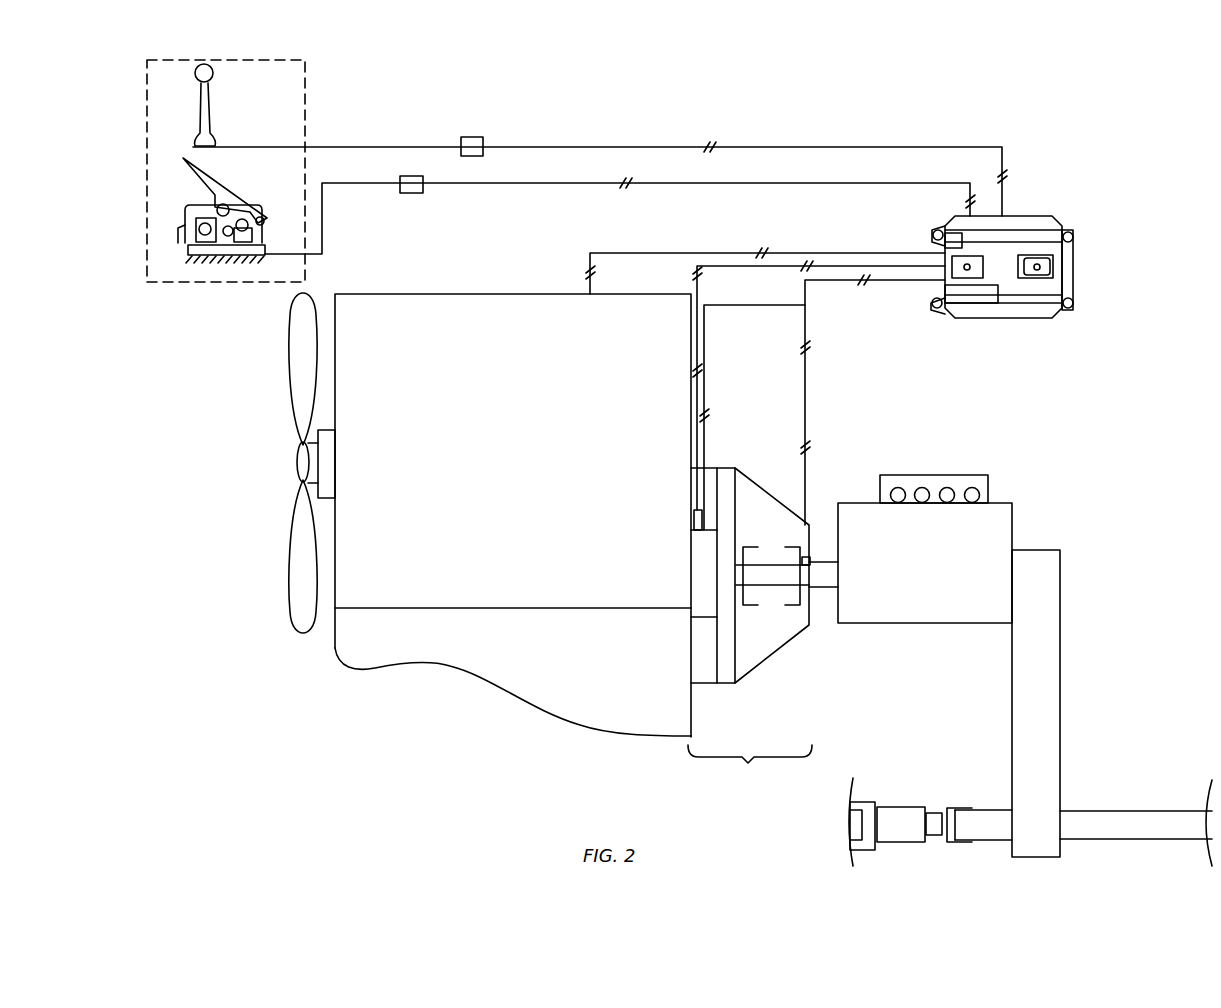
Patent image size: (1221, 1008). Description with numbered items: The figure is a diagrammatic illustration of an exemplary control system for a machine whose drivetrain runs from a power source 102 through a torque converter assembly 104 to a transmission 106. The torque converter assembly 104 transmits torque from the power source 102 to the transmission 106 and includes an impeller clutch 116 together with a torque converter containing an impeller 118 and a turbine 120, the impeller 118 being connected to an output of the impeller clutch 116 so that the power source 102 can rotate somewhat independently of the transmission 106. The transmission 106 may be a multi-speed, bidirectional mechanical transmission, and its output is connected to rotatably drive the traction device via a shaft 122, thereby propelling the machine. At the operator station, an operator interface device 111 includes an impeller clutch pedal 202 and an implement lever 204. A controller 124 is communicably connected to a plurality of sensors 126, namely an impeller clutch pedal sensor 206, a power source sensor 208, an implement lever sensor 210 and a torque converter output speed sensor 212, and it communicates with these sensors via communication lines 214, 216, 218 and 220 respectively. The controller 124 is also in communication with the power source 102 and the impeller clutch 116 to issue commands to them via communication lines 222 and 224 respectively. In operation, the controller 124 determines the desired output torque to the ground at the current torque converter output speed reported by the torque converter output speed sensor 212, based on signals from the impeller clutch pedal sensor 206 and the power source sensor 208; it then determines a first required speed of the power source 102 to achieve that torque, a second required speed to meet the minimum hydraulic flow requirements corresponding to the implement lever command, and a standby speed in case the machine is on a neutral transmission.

The power source 102 is at (479, 461).
The torque converter assembly 104 is at (750, 769).
The transmission 106 is at (939, 575).
The operator interface device 111 is at (145, 173).
The impeller clutch 116 is at (700, 618).
The impeller 118 is at (748, 605).
The turbine 120 is at (785, 606).
The shaft 122 is at (1078, 818).
The controller 124 is at (1073, 267).
The plurality of sensors 126 is at (417, 207).
The impeller clutch pedal 202 is at (231, 203).
The implement lever 204 is at (207, 90).
The impeller clutch pedal sensor 206 is at (407, 194).
The power source sensor 208 is at (705, 510).
The implement lever sensor 210 is at (473, 137).
The torque converter output speed sensor 212 is at (815, 555).
The communication line 214 is at (810, 183).
The communication line 216 is at (885, 265).
The communication line 218 is at (650, 147).
The communication line 220 is at (808, 387).
The communication line 222 is at (707, 253).
The communication line 224 is at (740, 305).